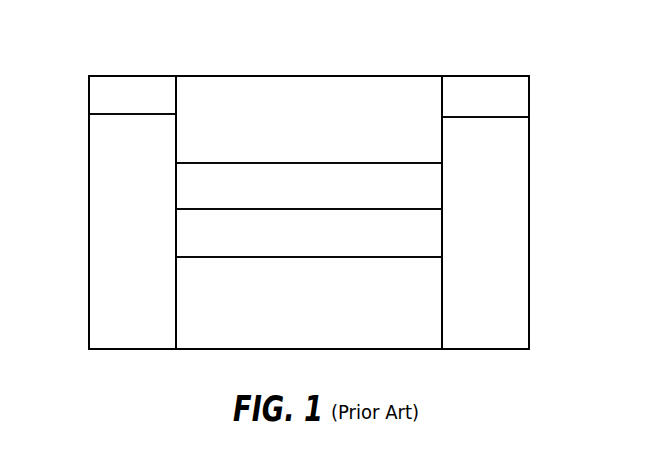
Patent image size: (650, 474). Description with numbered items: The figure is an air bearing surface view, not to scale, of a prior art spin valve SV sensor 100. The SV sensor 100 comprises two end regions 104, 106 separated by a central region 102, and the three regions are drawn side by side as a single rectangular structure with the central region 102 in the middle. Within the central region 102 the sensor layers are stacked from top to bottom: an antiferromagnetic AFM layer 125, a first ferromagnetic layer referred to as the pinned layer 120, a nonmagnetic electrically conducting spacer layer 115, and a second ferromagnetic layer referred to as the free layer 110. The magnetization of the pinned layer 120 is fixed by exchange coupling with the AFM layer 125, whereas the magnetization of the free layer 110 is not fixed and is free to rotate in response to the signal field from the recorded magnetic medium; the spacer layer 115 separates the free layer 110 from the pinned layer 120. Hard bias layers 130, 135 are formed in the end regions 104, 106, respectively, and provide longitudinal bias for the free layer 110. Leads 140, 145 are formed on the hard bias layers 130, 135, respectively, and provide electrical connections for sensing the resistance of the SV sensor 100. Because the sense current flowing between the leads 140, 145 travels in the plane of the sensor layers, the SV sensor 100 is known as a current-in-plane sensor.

The SV sensor 100 is at (518, 389).
The central region 102 is at (440, 55).
The end region 104 is at (175, 55).
The end region 106 is at (528, 55).
The free layer 110 is at (438, 308).
The spacer layer 115 is at (438, 240).
The pinned layer 120 is at (438, 195).
The antiferromagnetic (AFM) layer 125 is at (438, 143).
The hard bias layer 130 is at (89, 157).
The hard bias layer 135 is at (524, 215).
The lead 140 is at (89, 97).
The lead 145 is at (526, 100).